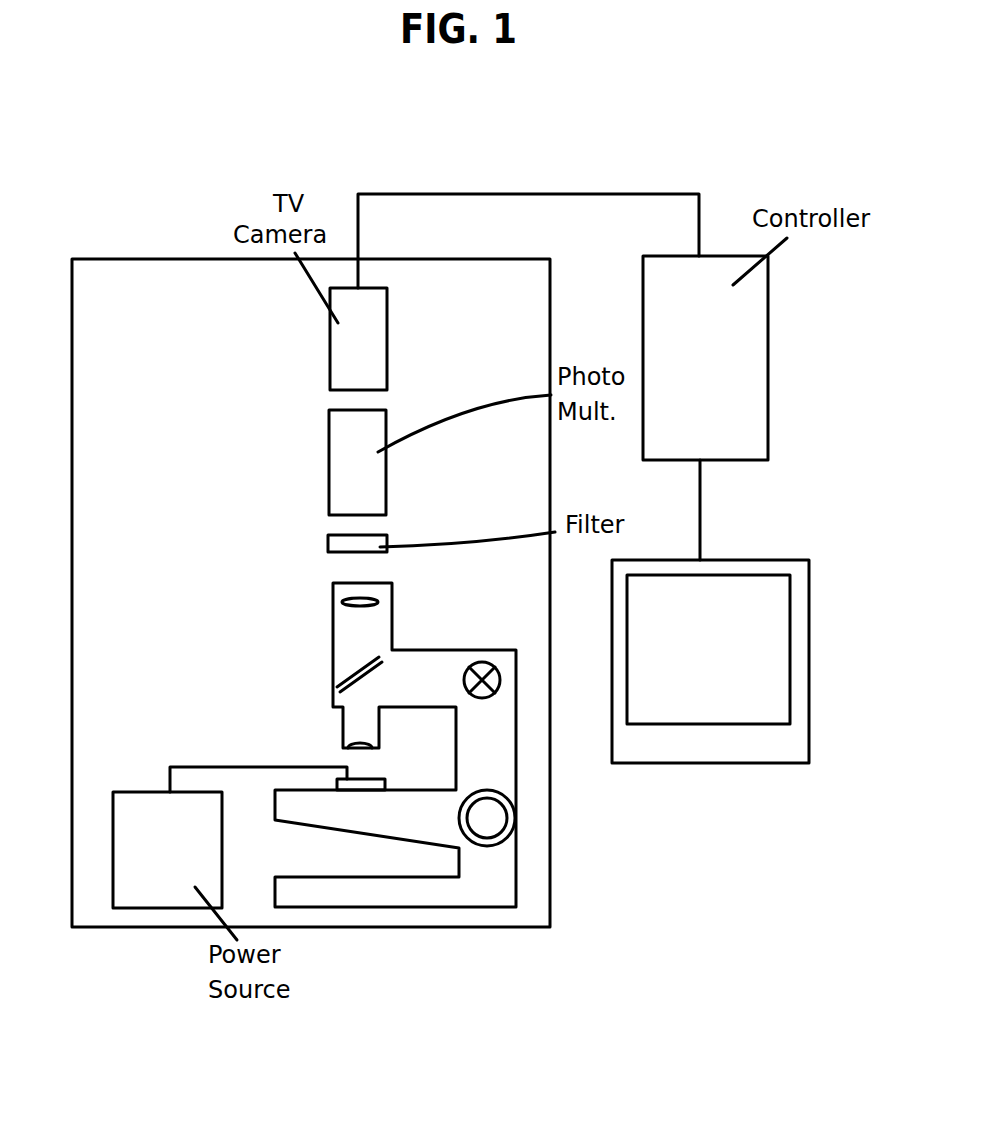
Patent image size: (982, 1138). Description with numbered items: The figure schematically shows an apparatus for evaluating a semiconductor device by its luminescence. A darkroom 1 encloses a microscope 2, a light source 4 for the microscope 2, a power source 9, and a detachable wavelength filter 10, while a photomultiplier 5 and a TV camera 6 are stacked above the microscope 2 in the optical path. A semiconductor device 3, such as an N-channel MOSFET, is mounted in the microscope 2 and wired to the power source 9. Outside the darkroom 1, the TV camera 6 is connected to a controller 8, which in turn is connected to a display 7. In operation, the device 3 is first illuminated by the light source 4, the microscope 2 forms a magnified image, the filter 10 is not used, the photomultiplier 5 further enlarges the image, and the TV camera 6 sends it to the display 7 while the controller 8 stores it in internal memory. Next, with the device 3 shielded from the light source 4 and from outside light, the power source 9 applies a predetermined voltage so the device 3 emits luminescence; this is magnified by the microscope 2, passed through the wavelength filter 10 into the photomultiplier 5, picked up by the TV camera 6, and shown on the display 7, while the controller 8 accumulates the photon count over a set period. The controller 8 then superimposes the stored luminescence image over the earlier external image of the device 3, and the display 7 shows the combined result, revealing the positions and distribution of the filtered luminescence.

The darkroom 1 is at (202, 260).
The microscope 2 is at (333, 665).
The semiconductor device 3 is at (335, 782).
The light source 4 is at (503, 652).
The photomultiplier 5 is at (329, 483).
The TV camera 6 is at (328, 365).
The display 7 is at (793, 558).
The controller 8 is at (768, 314).
The power source 9 is at (152, 790).
The wavelength filter 10 is at (388, 544).